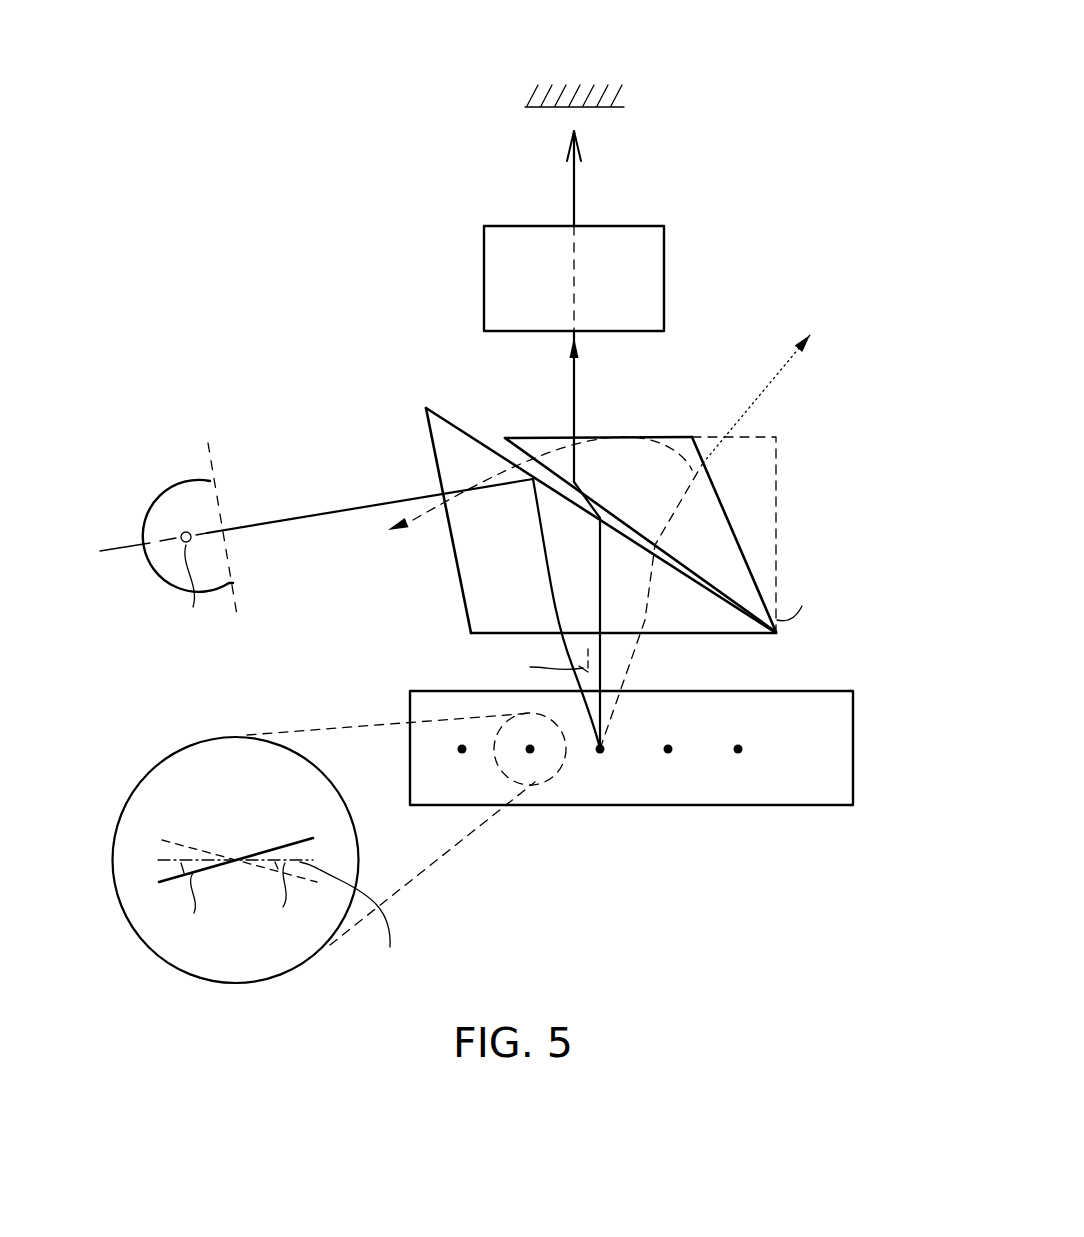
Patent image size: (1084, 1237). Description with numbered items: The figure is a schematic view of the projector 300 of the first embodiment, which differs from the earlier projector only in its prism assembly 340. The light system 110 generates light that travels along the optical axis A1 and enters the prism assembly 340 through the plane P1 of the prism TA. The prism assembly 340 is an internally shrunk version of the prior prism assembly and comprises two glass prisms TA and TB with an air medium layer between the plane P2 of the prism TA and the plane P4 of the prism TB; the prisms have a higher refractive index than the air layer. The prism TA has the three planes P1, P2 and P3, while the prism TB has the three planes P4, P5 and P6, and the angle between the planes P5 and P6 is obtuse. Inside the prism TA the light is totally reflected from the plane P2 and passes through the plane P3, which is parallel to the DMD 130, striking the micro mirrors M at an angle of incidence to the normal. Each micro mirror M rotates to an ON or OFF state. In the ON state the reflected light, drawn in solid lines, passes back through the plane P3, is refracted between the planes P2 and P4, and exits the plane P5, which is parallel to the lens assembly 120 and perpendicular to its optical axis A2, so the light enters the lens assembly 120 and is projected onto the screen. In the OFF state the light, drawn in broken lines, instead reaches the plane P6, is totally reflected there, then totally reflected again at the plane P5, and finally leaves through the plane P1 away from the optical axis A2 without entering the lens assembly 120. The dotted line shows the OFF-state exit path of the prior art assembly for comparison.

The projector 300 is at (753, 58).
The light system 110 is at (166, 560).
The lens assembly 120 is at (643, 226).
The DMD 130 is at (828, 691).
The prism assembly 340 is at (623, 511).
The prism TA is at (574, 520).
The prism TB is at (672, 511).
The plane P1 is at (440, 475).
The plane P2 is at (422, 582).
The plane P3 is at (480, 632).
The plane P4 is at (607, 505).
The plane P5 is at (652, 437).
The plane P6 is at (730, 523).
The optical axis A1 is at (153, 591).
The optical axis A2 is at (574, 293).
The micro mirror M is at (258, 838).